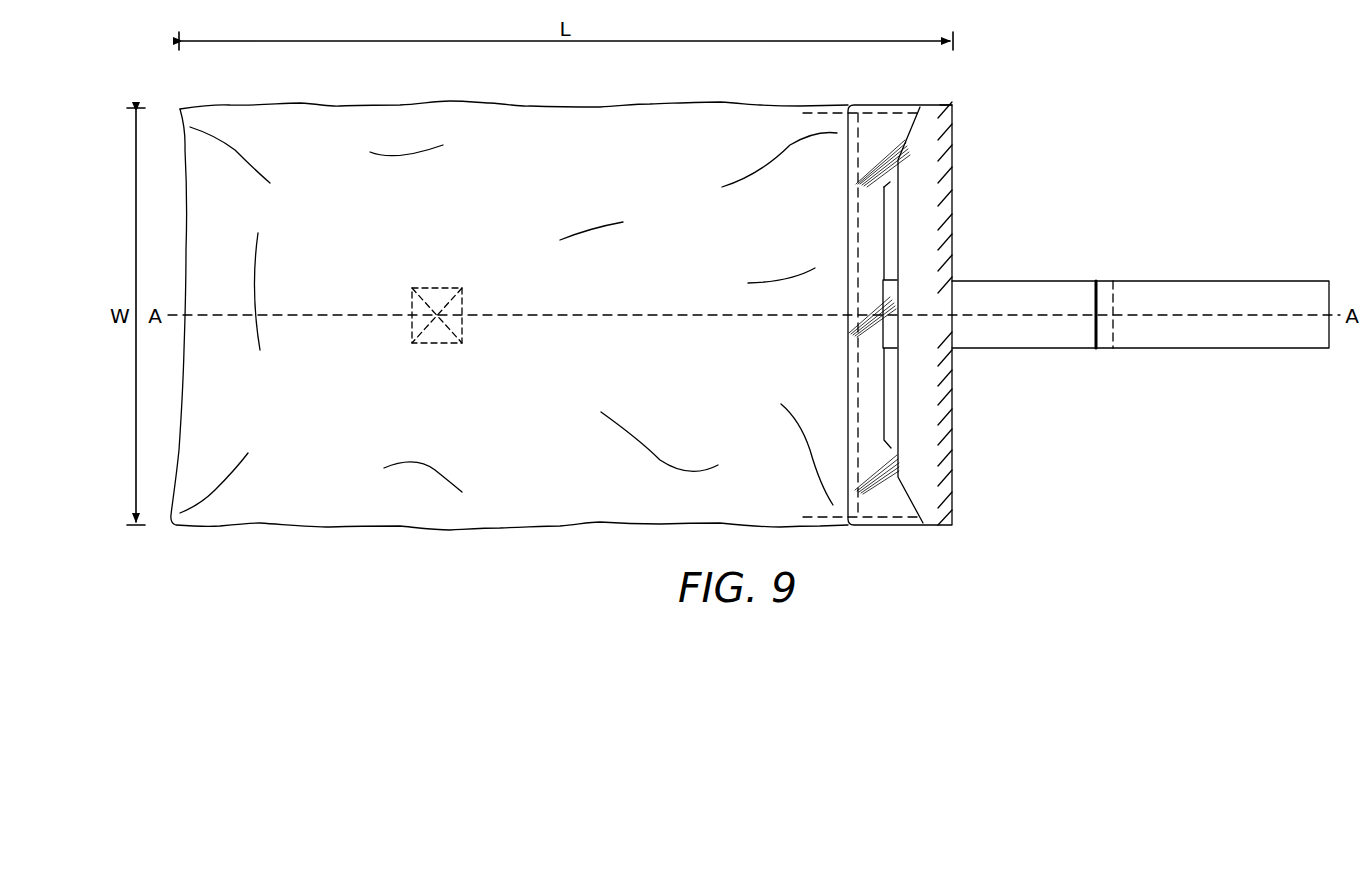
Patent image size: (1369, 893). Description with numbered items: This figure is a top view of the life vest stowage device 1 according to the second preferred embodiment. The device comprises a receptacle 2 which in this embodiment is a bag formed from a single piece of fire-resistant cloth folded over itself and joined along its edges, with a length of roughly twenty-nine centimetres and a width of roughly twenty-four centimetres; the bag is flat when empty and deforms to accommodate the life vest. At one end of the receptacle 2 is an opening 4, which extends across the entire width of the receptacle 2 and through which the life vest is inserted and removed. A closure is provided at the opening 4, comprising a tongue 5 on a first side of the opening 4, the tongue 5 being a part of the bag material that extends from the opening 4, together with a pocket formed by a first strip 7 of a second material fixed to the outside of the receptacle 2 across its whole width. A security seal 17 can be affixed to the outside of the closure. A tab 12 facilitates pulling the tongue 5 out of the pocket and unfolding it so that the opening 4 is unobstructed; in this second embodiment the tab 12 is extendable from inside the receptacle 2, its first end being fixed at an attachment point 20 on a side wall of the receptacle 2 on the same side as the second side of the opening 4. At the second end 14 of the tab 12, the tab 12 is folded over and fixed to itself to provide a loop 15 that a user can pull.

The life vest stowage device 1 is at (1056, 487).
The receptacle 2 is at (530, 118).
The opening 4 is at (962, 217).
The tongue 5 is at (893, 428).
The first strip 7 is at (885, 120).
The tab 12 is at (1030, 349).
The second end 14 is at (1309, 265).
The loop 15 is at (1272, 349).
The security seal 17 is at (946, 151).
The attachment point 20 is at (435, 296).